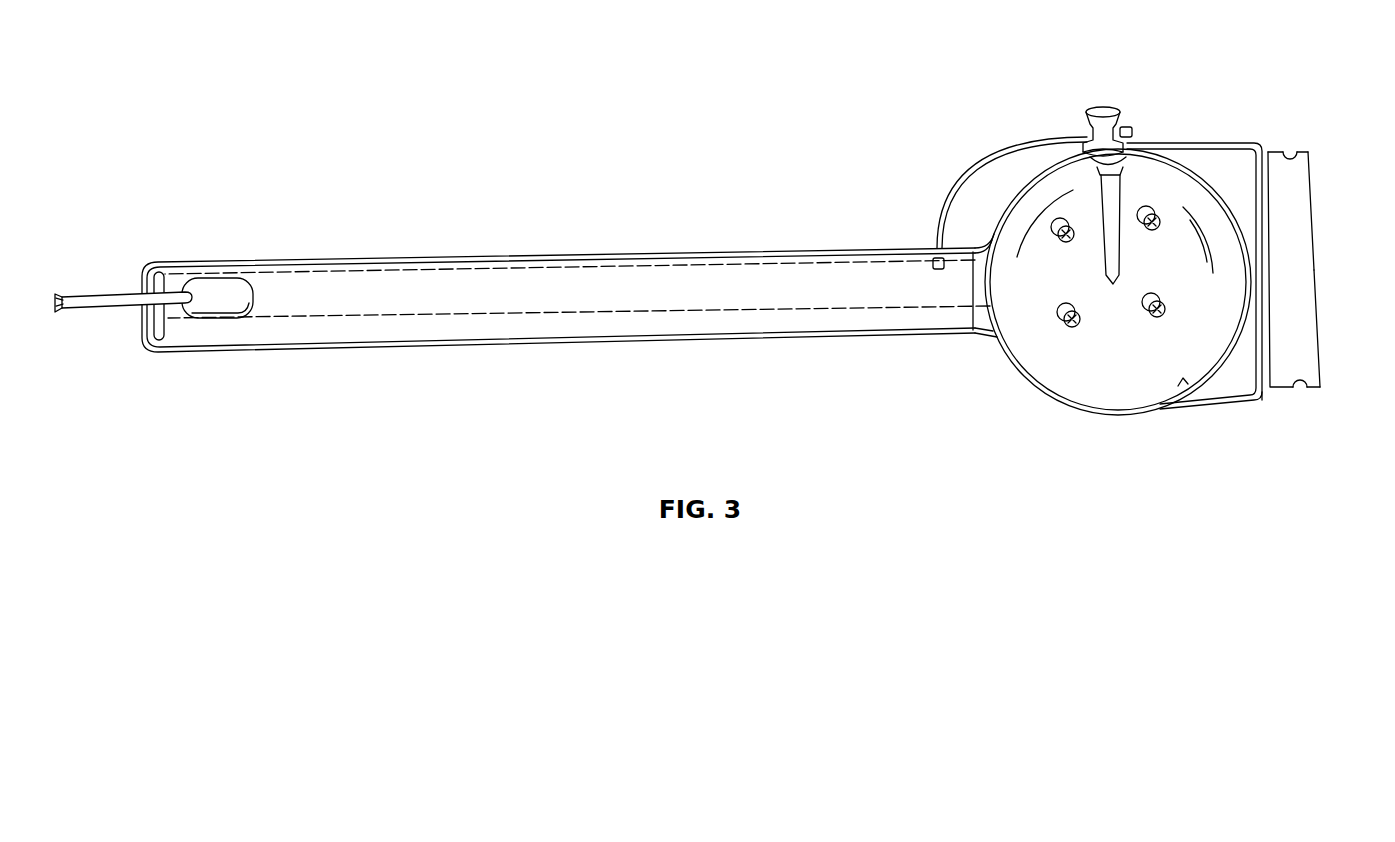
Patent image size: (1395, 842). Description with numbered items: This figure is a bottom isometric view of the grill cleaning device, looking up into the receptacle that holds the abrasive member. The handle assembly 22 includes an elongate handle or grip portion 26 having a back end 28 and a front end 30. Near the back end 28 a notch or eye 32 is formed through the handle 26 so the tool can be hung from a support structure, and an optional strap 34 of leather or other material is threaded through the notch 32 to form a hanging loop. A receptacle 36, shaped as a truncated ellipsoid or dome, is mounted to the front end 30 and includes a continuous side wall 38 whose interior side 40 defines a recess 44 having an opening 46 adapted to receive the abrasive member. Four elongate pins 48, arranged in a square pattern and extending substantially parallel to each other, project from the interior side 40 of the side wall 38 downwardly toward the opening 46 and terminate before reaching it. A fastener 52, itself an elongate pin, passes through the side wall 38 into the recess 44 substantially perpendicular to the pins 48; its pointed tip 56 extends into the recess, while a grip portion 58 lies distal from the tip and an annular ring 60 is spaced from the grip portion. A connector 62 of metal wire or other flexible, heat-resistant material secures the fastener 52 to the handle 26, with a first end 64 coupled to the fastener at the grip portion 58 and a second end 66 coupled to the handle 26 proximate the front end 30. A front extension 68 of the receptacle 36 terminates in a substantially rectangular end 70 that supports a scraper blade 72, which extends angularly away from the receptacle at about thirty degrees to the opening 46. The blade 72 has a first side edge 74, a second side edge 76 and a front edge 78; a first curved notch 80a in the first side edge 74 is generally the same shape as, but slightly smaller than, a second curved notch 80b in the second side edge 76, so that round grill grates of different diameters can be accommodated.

The handle portion or assembly 22 is at (350, 258).
The elongate handle or grip portion 26 is at (426, 278).
The back end 28 is at (145, 325).
The front end 30 is at (946, 302).
The notch or eye 32 is at (205, 278).
The strap 34 is at (85, 294).
The receptacle 36 is at (1095, 424).
The continuous side wall 38 is at (1038, 363).
The interior side 40 is at (1129, 327).
The recess 44 is at (1017, 341).
The opening 46 is at (1183, 388).
The elongate pins 48 is at (1052, 230).
The fastener 52 is at (1103, 106).
The pointed tip 56 is at (1120, 282).
The grip portion 58 is at (1086, 128).
The annular ring 60 is at (1134, 146).
The connector 62 is at (992, 150).
The first end 64 is at (1128, 126).
The second end 66 is at (932, 266).
The front extension 68 is at (1258, 403).
The substantially rectangular end 70 is at (1267, 255).
The scraper blade 72 is at (1309, 286).
The first side edge 74 is at (1268, 150).
The second side edge 76 is at (1272, 390).
The front edge 78 is at (1316, 198).
The first curved notch 80a is at (1290, 152).
The second curved notch 80b is at (1301, 390).